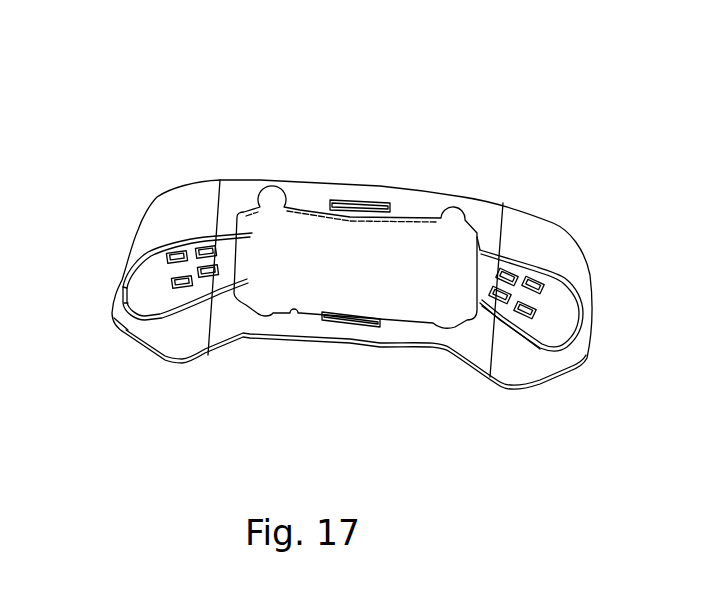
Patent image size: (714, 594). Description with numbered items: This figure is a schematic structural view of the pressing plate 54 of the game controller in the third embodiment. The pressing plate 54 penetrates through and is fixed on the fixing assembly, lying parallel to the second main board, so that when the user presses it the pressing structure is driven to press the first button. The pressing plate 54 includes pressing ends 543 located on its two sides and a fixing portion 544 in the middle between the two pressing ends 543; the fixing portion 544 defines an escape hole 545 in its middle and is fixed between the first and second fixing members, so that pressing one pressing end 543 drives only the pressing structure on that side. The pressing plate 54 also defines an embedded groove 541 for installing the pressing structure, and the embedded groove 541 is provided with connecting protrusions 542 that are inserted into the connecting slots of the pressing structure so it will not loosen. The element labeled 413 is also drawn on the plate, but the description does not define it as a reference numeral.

The housing assembly 54 is at (88, 77).
The groove 541 is at (525, 330).
The right receiving pocket 542 is at (540, 283).
The left receiving pocket 543 is at (193, 207).
The upper slot 544 is at (345, 195).
The lower slot 545 is at (320, 297).
The cover panel 413 is at (517, 222).